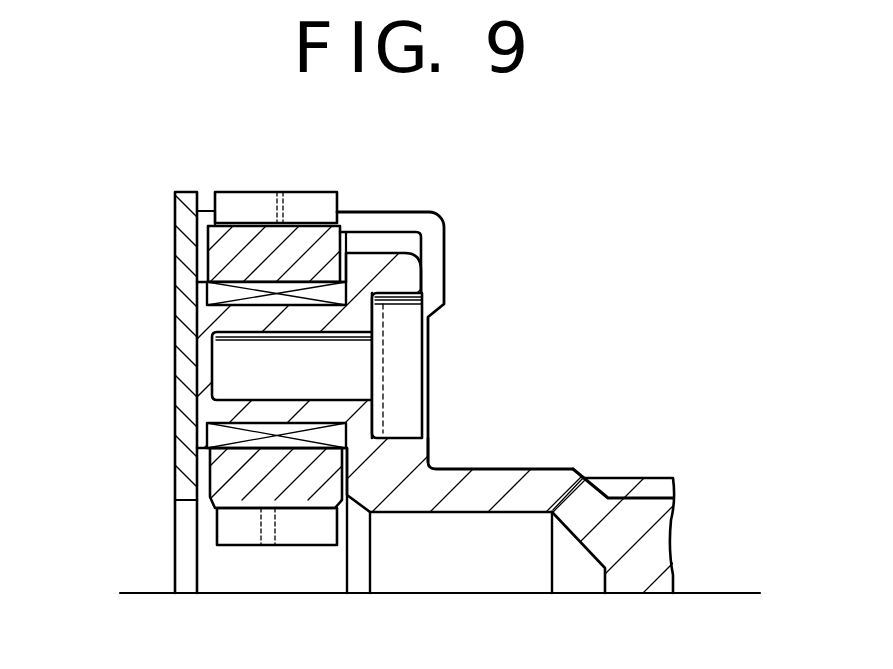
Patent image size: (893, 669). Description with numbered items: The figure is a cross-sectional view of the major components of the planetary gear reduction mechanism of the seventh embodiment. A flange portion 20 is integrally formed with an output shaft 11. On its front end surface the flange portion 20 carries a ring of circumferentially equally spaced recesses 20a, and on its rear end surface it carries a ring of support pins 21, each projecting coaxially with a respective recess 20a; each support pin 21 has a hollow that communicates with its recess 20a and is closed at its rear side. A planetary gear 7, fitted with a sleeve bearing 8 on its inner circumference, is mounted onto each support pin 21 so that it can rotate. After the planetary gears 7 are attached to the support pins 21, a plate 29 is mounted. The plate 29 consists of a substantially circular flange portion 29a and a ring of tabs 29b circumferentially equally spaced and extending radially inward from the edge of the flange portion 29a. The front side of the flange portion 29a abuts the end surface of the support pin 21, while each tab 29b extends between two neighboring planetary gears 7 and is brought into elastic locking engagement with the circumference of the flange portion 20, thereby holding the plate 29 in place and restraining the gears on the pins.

The planetary gear 7 is at (262, 498).
The sleeve bearing 8 is at (207, 435).
The output shaft 11 is at (655, 545).
The flange portion 20 is at (407, 274).
The recess 20a is at (408, 380).
The support pin 21 is at (213, 410).
The plate 29 is at (176, 259).
The flange portion 29a is at (185, 332).
The tab 29b is at (410, 222).